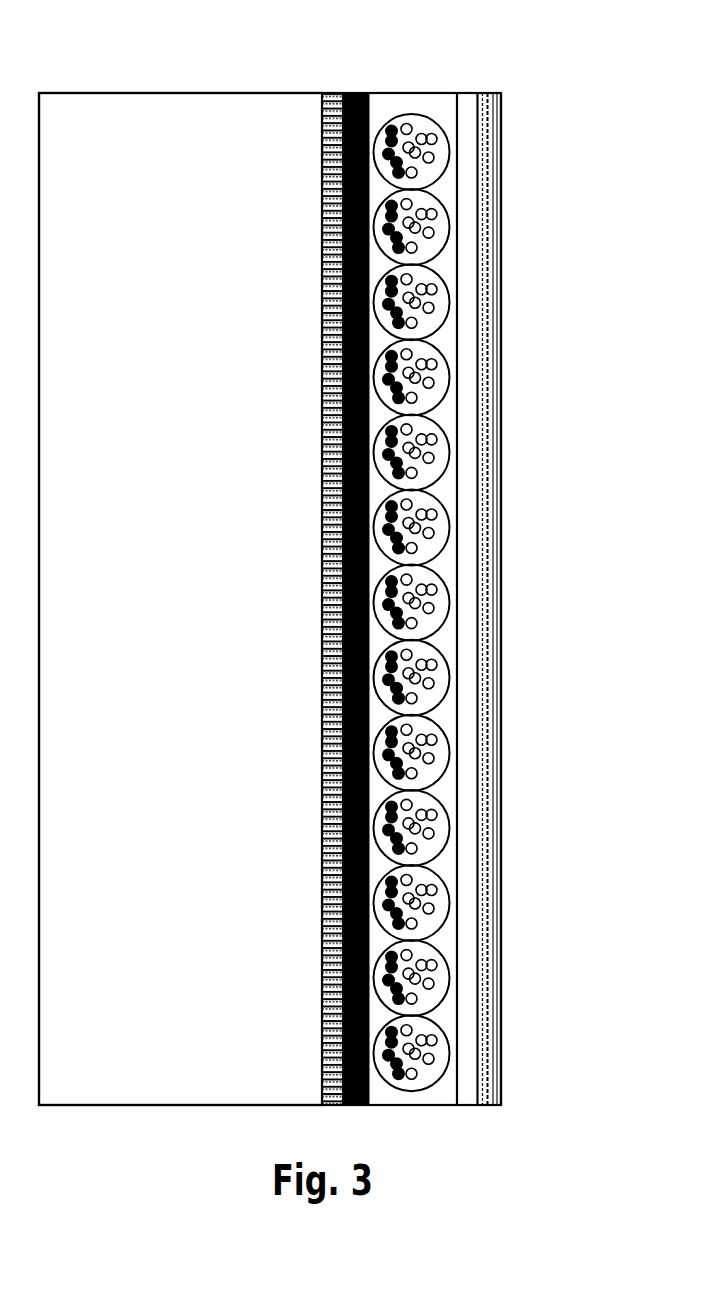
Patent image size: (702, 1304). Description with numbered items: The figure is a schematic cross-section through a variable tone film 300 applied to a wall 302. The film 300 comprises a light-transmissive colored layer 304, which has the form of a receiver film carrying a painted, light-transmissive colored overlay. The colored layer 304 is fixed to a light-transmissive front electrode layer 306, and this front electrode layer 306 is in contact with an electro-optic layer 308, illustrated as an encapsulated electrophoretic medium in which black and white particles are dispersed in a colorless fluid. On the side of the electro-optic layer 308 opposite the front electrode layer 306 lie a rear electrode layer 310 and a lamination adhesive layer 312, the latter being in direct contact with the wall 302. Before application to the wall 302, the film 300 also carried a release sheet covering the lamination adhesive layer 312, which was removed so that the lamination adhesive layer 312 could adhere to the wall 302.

The variable tone film 300 is at (402, 68).
The wall 302 is at (197, 356).
The light-transmissive colored layer 304 is at (488, 102).
The light-transmissive front electrode layer 306 is at (463, 102).
The electro-optic layer 308 is at (418, 414).
The rear electrode layer 310 is at (356, 102).
The lamination adhesive layer 312 is at (331, 100).